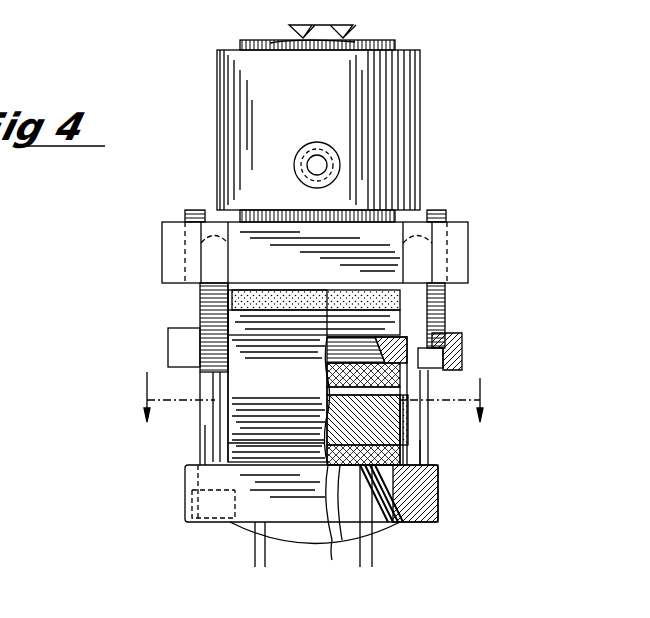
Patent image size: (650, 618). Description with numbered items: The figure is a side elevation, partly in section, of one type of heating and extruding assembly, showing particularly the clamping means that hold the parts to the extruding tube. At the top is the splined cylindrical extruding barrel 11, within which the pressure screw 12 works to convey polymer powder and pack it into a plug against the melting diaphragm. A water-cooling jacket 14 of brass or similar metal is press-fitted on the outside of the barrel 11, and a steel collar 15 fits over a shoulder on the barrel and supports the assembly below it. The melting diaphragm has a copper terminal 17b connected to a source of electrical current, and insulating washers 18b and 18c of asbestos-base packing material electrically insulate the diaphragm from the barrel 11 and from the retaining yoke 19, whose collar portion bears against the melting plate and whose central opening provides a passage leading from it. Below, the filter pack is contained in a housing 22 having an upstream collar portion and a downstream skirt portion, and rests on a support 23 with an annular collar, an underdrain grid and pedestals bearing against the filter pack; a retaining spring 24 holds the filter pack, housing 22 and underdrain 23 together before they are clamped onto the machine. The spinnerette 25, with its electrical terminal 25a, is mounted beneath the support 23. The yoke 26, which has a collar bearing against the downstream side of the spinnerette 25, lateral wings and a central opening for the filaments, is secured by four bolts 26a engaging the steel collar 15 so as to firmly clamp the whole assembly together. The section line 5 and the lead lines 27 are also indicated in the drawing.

The section line 5- 5 is at (312, 384).
The extruding barrel 11 is at (396, 46).
The pressure screw 12 is at (356, 33).
The water-cooling jacket 14 is at (408, 135).
The steel collar 15 is at (462, 252).
The copper terminal 17b is at (446, 330).
The insulating washer 18b is at (446, 303).
The insulating washer 18c is at (460, 333).
The retaining yoke 19 is at (178, 341).
The filter pack housing 22 is at (250, 379).
The support 23 is at (400, 446).
The retaining spring 24 is at (405, 414).
The spinnerette 25 is at (323, 523).
The electrical terminal 25a is at (240, 445).
The yoke 26 is at (442, 484).
The bolt 26a is at (464, 455).
The leads 27 is at (265, 567).